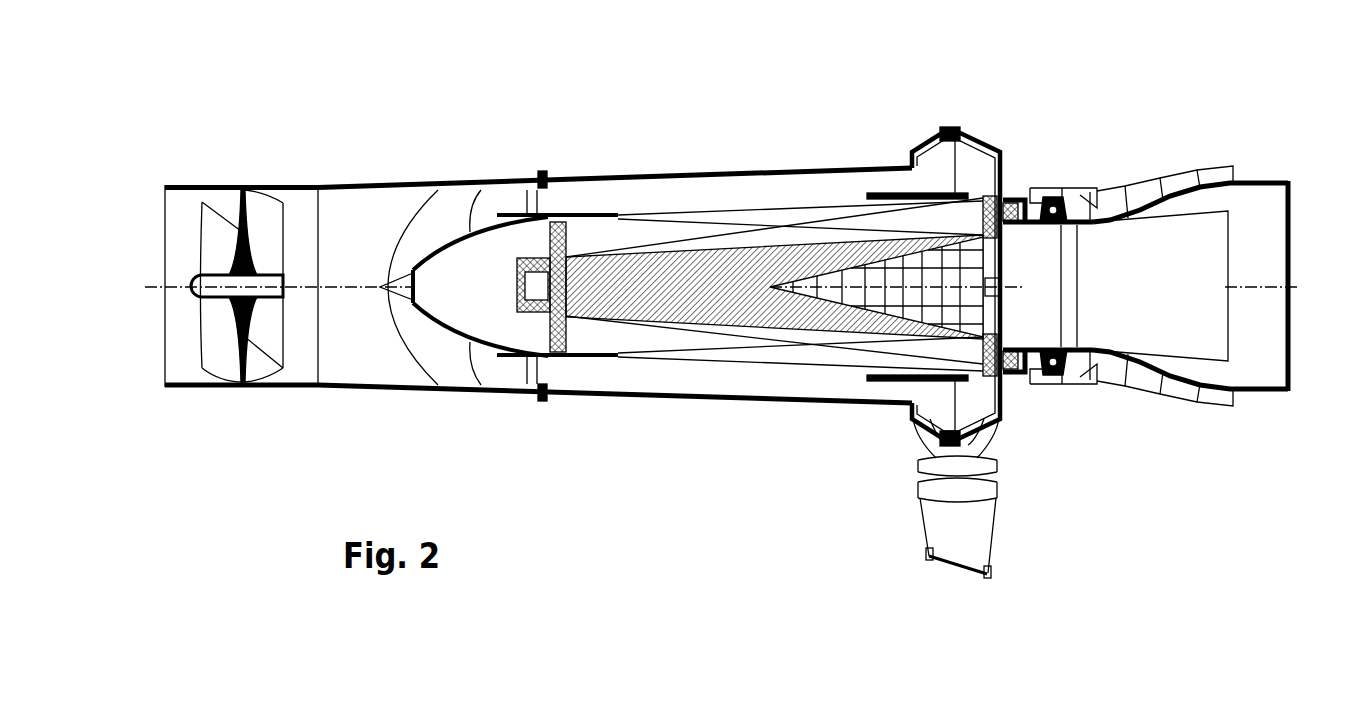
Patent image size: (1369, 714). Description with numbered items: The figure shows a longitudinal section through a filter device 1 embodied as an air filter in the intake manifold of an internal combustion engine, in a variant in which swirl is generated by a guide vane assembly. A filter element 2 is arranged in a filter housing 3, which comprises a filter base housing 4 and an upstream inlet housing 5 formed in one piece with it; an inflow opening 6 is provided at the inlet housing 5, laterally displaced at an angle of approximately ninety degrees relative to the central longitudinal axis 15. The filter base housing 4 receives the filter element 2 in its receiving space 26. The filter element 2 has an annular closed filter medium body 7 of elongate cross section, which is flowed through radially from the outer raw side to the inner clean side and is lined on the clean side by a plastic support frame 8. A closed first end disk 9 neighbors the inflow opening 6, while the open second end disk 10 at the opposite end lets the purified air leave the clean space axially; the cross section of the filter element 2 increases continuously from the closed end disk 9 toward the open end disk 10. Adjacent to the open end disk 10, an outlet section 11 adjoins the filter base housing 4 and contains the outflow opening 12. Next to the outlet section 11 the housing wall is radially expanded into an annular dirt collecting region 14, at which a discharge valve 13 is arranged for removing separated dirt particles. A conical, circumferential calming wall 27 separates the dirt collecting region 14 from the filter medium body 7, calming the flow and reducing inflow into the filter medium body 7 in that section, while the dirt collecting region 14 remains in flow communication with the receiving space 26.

The filter device 1 is at (642, 60).
The filter element 2 is at (674, 196).
The filter housing 3 is at (603, 182).
The filter base housing 4 is at (718, 176).
The inlet housing 5 is at (352, 186).
The inflow opening 6 is at (163, 217).
The filter medium body 7 is at (681, 345).
The support frame 8 is at (800, 288).
The first end disk 9 is at (565, 345).
The second end disk 10 is at (985, 215).
The outlet section 11 is at (1173, 188).
The outflow opening 12 is at (1290, 220).
The discharge valve 13 is at (980, 525).
The dirt collecting region 14 is at (978, 416).
The central longitudinal axis 15 is at (1263, 288).
The receiving space 26 is at (721, 385).
The calming wall 27 is at (880, 375).